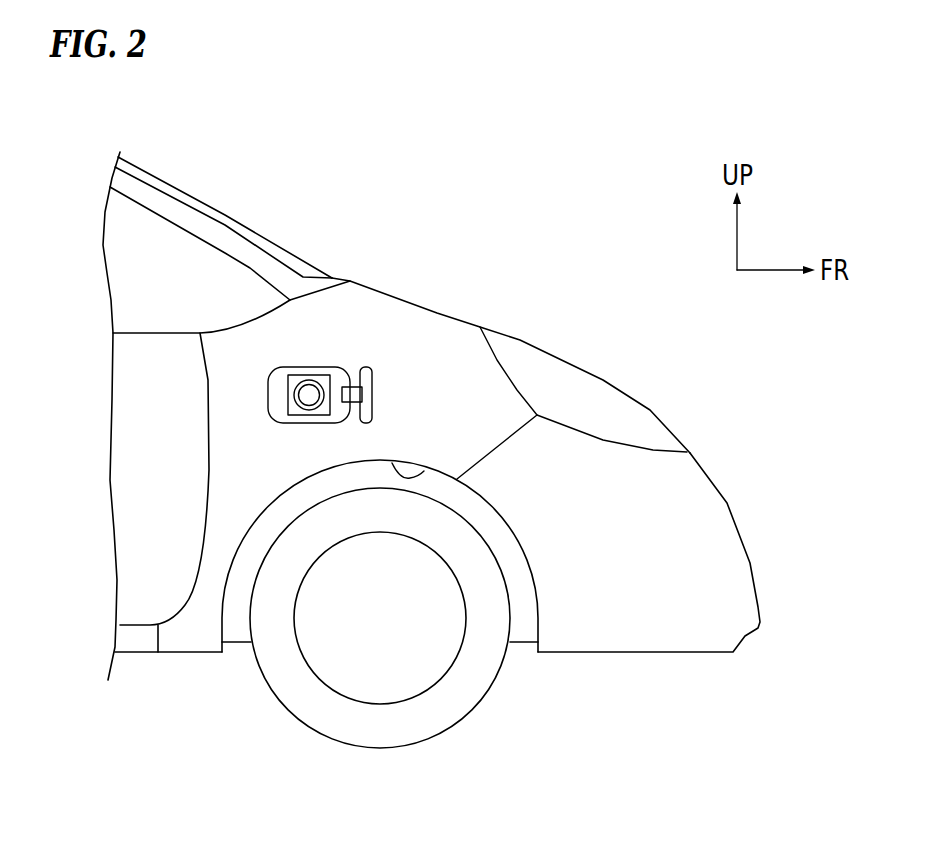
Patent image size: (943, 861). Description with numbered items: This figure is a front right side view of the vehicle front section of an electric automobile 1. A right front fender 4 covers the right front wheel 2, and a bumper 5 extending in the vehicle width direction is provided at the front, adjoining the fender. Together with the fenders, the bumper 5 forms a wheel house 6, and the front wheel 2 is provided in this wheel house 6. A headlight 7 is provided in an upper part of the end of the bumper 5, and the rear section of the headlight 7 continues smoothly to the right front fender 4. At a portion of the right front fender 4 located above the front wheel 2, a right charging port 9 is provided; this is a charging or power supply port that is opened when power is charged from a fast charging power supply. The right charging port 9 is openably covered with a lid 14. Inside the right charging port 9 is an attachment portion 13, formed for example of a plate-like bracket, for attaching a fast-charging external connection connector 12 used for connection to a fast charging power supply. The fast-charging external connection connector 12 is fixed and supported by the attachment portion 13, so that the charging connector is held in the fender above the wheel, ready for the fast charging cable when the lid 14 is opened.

The electric automobile 1 is at (488, 115).
The front wheel 2 is at (363, 742).
The right front fender 4 is at (437, 322).
The bumper 5 is at (725, 508).
The wheel house 6 is at (427, 468).
The headlight 7 is at (597, 388).
The right charging port 9 is at (273, 370).
The fast-charging external connection connector 12 is at (310, 380).
The attachment portion 13 is at (288, 407).
The lid 14 is at (365, 367).